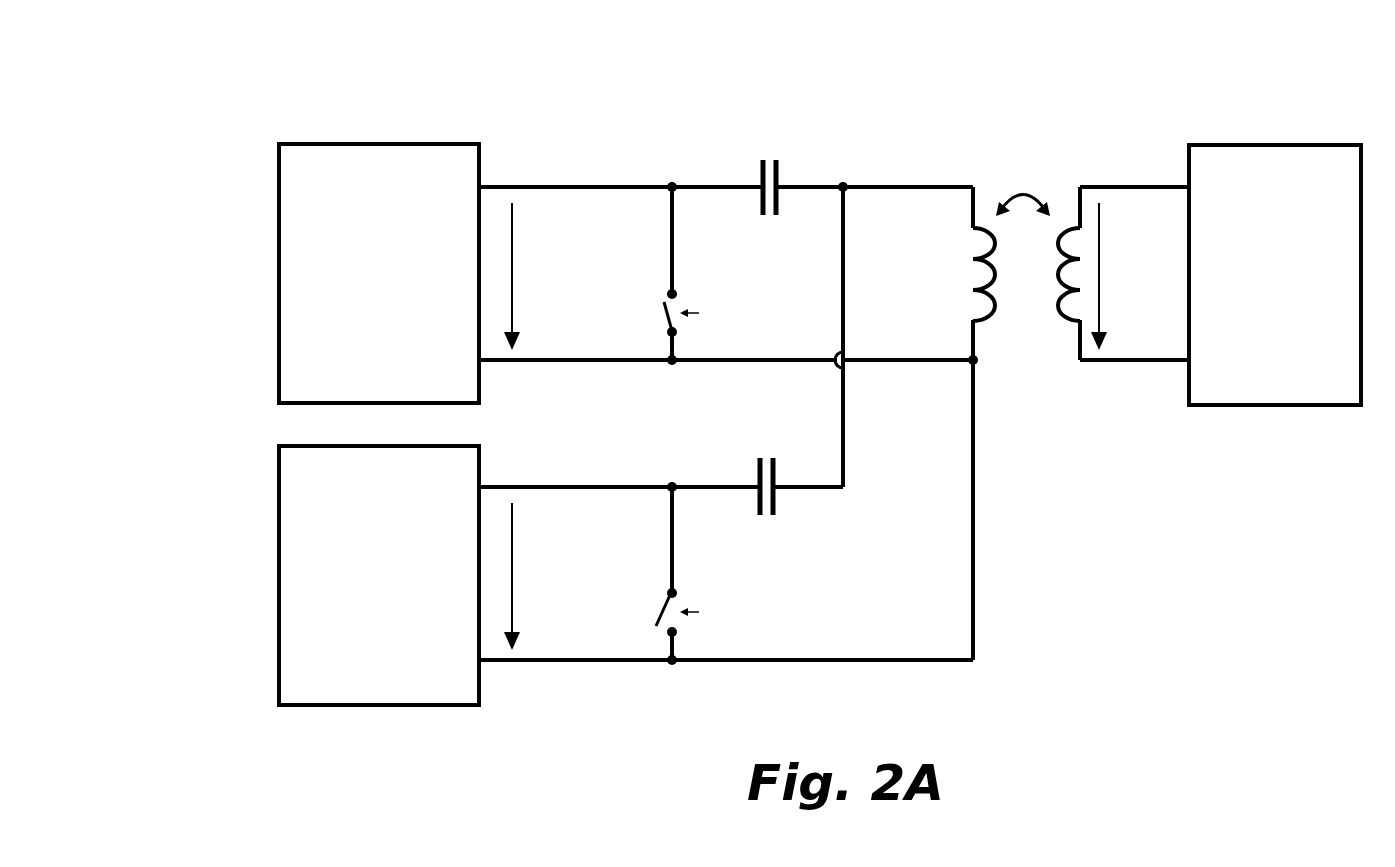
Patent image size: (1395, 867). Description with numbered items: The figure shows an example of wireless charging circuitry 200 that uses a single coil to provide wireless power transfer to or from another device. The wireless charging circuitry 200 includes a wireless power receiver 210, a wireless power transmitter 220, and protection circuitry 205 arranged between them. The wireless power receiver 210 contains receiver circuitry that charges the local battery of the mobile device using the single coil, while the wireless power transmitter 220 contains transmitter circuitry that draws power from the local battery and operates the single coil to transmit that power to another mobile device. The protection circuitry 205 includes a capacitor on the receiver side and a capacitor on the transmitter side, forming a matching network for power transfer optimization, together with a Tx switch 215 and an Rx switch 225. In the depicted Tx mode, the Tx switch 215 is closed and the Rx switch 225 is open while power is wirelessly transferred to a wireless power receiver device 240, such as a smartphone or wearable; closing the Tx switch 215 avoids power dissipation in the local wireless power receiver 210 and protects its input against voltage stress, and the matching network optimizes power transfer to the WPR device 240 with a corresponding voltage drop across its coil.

The wireless charging circuitry 200 is at (250, 101).
The protection circuitry 205 is at (870, 118).
The wireless power receiver 210 is at (278, 268).
The Tx switch 215 is at (666, 303).
The wireless power transmitter 220 is at (278, 594).
The Rx switch 225 is at (652, 610).
The wireless power receiver (WPR) device 240 is at (1265, 144).